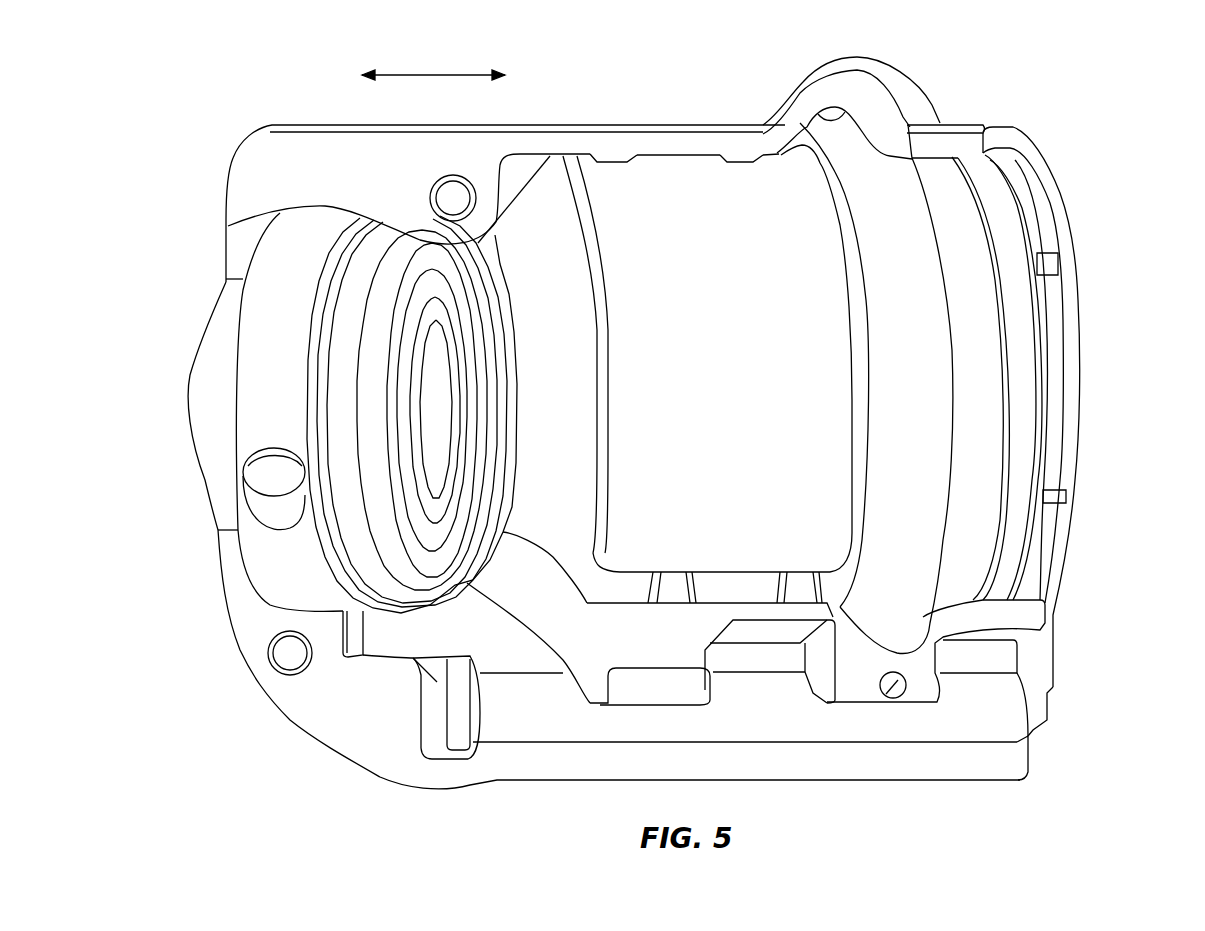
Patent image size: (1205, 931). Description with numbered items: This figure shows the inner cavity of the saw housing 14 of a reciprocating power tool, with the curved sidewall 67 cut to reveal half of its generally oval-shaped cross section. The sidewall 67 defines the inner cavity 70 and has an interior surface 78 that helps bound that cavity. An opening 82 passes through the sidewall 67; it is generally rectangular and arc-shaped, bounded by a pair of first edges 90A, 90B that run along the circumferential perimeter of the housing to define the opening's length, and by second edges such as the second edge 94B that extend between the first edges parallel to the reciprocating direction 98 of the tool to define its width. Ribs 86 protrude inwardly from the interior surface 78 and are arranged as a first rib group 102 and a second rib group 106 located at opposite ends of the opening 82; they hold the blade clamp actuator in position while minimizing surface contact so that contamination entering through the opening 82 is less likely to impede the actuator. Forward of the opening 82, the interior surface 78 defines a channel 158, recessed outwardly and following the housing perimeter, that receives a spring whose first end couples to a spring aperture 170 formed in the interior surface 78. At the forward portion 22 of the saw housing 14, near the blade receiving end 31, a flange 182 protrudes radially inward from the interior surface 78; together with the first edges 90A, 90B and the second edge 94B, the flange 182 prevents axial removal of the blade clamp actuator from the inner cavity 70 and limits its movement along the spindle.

The saw housing 14 is at (313, 127).
The reciprocating direction 98 is at (440, 74).
The curved sidewall 67 is at (565, 125).
The opening 82 is at (683, 203).
The channel 158 is at (815, 108).
The forward portion 22 is at (966, 121).
The inner cavity 70 is at (990, 214).
The blade receiving end 31 is at (1060, 228).
The flange 182 is at (1058, 353).
The first rib group 102 is at (764, 179).
The ribs 86 is at (613, 170).
The first edge 90A is at (605, 321).
The first edge 90B is at (847, 273).
The interior surface 78 is at (576, 384).
The second edge 94B is at (640, 572).
The second rib group 106 is at (805, 527).
The spring aperture 170 is at (887, 700).